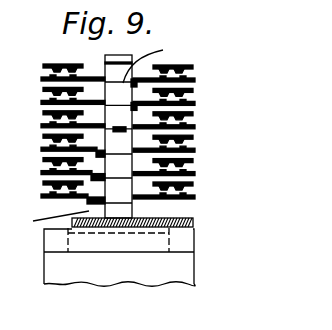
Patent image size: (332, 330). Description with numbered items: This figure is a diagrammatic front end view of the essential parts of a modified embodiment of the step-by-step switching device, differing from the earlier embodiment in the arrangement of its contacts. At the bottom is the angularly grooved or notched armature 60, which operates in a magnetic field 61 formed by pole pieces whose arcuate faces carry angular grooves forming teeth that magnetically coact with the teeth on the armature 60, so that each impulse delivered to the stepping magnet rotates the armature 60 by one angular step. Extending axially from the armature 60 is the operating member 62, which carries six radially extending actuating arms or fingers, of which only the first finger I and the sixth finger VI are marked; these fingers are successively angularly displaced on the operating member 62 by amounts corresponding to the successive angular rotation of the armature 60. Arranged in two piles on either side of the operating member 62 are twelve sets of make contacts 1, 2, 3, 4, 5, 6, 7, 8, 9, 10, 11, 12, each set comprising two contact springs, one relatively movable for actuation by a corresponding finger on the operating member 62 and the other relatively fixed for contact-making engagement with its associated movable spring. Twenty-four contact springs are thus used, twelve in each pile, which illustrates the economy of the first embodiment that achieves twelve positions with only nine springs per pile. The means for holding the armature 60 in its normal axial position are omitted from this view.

The set of make contacts 1 is at (64, 191).
The set of make contacts 2 is at (62, 168).
The set of make contacts 3 is at (62, 144).
The set of make contacts 4 is at (62, 119).
The set of make contacts 5 is at (62, 95).
The set of make contacts 6 is at (62, 72).
The set of make contacts 7 is at (176, 189).
The set of make contacts 8 is at (176, 166).
The set of make contacts 9 is at (176, 142).
The set of make contacts 10 is at (170, 120).
The set of make contacts 11 is at (179, 97).
The set of make contacts 12 is at (179, 74).
The armature 60 is at (166, 225).
The magnetic field 61 is at (194, 258).
The operating member 62 is at (105, 67).
The actuating finger I is at (54, 223).
The actuating finger VI is at (165, 47).